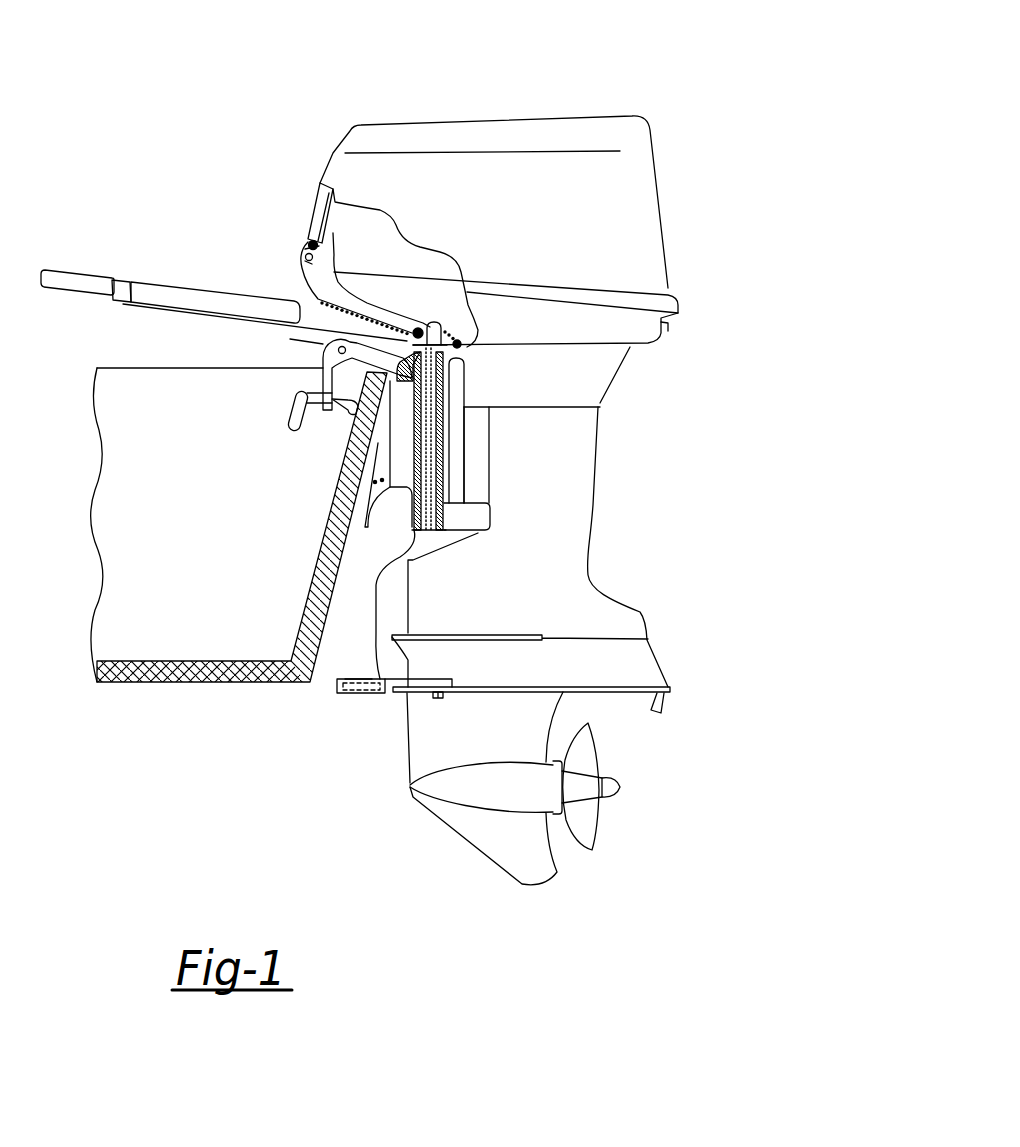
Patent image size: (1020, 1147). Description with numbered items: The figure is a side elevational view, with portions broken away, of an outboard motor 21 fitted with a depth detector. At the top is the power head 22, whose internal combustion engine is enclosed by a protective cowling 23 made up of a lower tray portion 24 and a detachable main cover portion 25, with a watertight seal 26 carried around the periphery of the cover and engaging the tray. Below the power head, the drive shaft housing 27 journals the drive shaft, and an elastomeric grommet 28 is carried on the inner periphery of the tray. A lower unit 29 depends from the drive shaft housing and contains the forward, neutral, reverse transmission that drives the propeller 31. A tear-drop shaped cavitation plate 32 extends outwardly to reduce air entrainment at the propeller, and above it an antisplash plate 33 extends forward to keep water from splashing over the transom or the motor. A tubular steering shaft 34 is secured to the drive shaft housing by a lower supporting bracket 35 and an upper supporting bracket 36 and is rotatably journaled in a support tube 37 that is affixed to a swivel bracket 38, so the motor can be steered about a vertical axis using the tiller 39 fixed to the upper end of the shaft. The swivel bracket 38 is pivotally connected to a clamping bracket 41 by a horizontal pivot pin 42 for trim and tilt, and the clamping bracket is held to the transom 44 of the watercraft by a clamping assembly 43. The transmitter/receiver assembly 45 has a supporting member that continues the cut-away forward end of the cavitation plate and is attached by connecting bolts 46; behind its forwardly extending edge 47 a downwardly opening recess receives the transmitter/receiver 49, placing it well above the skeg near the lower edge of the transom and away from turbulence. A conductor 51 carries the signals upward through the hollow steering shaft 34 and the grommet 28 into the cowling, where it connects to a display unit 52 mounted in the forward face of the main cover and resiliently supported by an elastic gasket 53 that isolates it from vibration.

The outboard motor 21 is at (628, 97).
The power head 22 is at (665, 217).
The protective cowling 23 is at (547, 131).
The lower tray portion 24 is at (307, 283).
The main cover portion 25 is at (481, 128).
The watertight seal 26 is at (306, 242).
The drive shaft housing 27 is at (580, 495).
The elastomeric grommet 28 is at (480, 330).
The lower unit 29 is at (483, 837).
The propeller 31 is at (590, 822).
The cavitation plate 32 is at (497, 683).
The antisplash plate 33 is at (508, 637).
The tubular steering shaft 34 is at (466, 404).
The lower supporting bracket 35 is at (468, 518).
The upper supporting bracket 36 is at (465, 366).
The support tube 37 is at (470, 475).
The swivel bracket 38 is at (450, 437).
The tiller 39 is at (207, 308).
The clamping bracket 41 is at (378, 443).
The pivot pin 42 is at (330, 357).
The clamping assembly 43 is at (305, 413).
The transom 44 is at (321, 559).
The transmitter/receiver assembly 45 is at (357, 676).
The connecting bolts 46 is at (444, 698).
The forwardly extending edge 47 is at (337, 690).
The transmitter/receiver 49 is at (365, 690).
The conductor 51 is at (403, 547).
The display unit 52 is at (317, 178).
The elastic gasket 53 is at (334, 208).